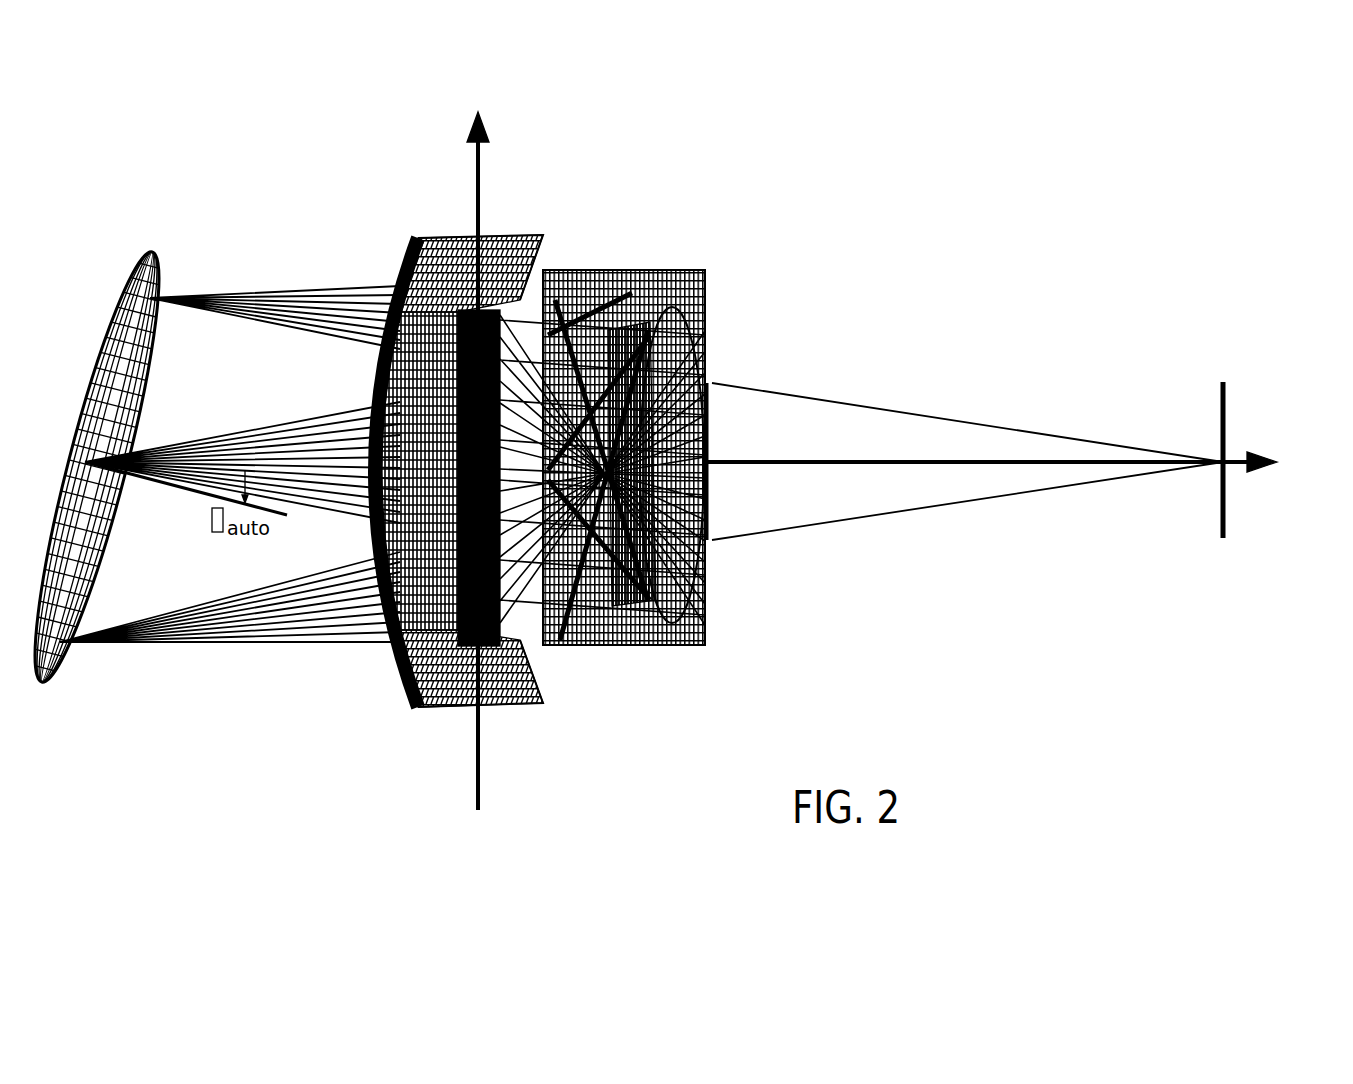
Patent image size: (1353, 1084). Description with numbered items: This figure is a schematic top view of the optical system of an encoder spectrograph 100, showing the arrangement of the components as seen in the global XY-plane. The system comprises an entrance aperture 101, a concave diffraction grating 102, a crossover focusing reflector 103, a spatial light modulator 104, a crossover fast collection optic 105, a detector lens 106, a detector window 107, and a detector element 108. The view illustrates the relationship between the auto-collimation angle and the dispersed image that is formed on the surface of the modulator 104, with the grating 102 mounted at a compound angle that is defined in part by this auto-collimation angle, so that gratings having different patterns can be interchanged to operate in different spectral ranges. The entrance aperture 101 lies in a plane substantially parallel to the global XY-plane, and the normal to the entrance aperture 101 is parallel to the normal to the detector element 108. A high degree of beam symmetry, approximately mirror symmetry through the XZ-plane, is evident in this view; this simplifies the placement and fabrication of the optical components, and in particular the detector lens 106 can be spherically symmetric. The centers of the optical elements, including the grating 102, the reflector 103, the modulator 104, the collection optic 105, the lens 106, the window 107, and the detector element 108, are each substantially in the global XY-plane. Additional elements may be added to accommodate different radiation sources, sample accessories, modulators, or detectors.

The encoder spectrograph 100 is at (1003, 220).
The entrance aperture 101 is at (1228, 380).
The concave diffraction grating 102 is at (160, 250).
The crossover focusing reflector 103 is at (637, 268).
The spatial light modulator 104 is at (525, 290).
The crossover fast collection optic 105 is at (497, 232).
The detector lens 106 is at (660, 360).
The detector window 107 is at (710, 383).
The detector element 108 is at (710, 441).